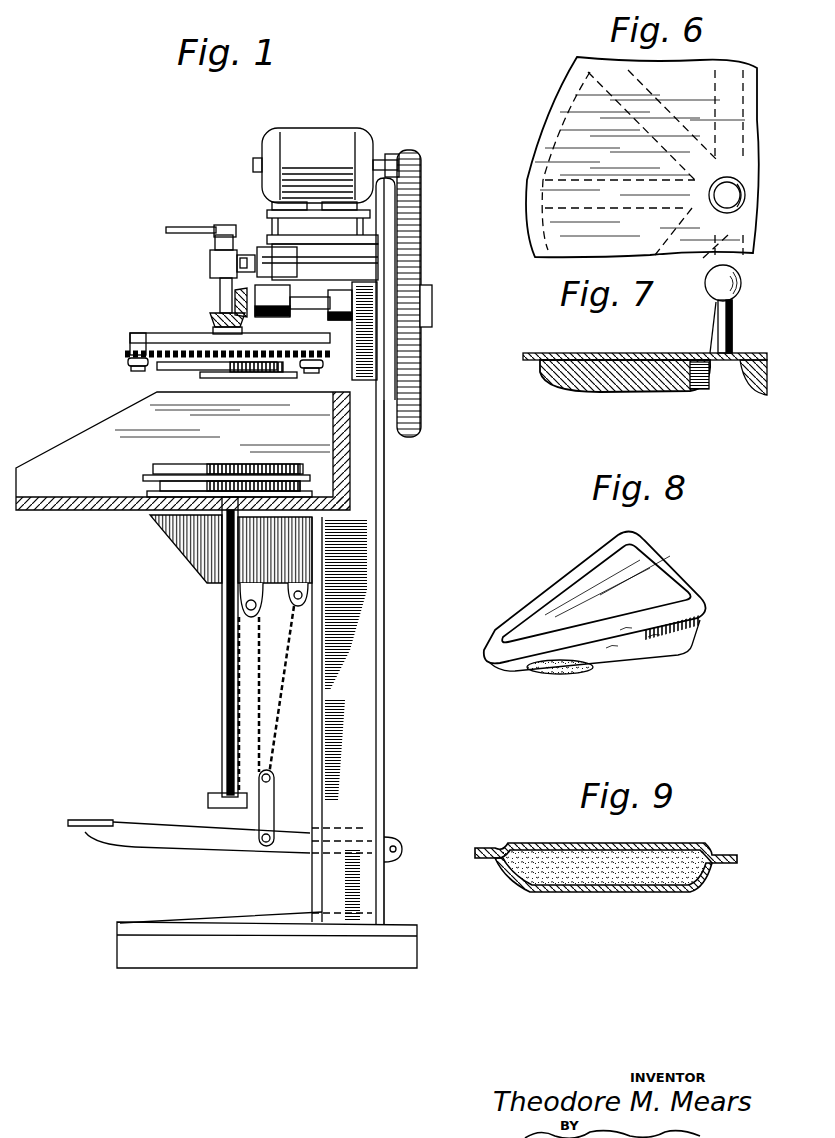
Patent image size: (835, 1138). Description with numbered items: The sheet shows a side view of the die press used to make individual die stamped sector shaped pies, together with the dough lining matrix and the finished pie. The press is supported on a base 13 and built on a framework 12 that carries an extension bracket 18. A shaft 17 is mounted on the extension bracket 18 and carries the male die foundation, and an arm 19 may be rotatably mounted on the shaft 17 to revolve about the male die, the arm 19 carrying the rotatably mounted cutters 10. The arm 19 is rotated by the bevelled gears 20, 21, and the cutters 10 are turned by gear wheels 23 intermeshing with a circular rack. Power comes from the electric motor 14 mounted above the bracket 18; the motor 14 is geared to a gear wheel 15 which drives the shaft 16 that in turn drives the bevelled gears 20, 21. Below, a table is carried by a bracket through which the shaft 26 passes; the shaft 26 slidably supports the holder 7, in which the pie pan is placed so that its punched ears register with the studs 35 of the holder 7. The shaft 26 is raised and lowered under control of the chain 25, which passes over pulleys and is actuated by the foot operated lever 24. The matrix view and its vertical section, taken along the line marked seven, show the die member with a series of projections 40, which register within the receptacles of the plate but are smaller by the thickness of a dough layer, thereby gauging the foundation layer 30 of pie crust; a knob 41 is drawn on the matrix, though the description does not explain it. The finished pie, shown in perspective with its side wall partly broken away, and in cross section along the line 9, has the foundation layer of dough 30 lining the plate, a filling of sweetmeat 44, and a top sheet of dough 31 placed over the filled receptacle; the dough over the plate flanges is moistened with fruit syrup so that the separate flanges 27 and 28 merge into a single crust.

In FIG. 1, the holder 7 is at (168, 465).
In FIG. 6, the holder 7 is at (505, 106).
In FIG. 8, the section line 9— 9 is at (522, 535).
In FIG. 1, the cutters 10 is at (128, 368).
In FIG. 1, the framework 12 is at (365, 795).
In FIG. 1, the base 13 is at (118, 946).
In FIG. 1, the electric motor 14 is at (326, 181).
In FIG. 1, the gear wheel 15 is at (421, 236).
In FIG. 1, the shaft 16 is at (432, 305).
In FIG. 1, the shaft 17 is at (220, 297).
In FIG. 1, the extension bracket 18 is at (210, 264).
In FIG. 1, the arm 19 is at (150, 334).
In FIG. 1, the bevelled gear 20 is at (210, 319).
In FIG. 1, the bevelled gear 21 is at (243, 323).
In FIG. 1, the gear wheels 23 is at (125, 353).
In FIG. 1, the foot operated lever 24 is at (100, 818).
In FIG. 1, the chain 25 is at (240, 750).
In FIG. 1, the shaft 26 is at (222, 663).
In FIG. 8, the flange 27 is at (552, 583).
In FIG. 9, the flange 27 is at (489, 840).
In FIG. 8, the flange 28 is at (487, 662).
In FIG. 9, the flange 28 is at (484, 860).
In FIG. 8, the foundation layer of dough 30 is at (553, 673).
In FIG. 9, the foundation layer of dough 30 is at (568, 892).
In FIG. 8, the top sheet of dough 31 is at (527, 628).
In FIG. 9, the top sheet of dough 31 is at (534, 834).
In FIG. 1, the studs 35 is at (148, 475).
In FIG. 6, the projections 40 is at (535, 150).
In FIG. 7, the projections 40 is at (550, 375).
In FIG. 6, the knob 41 is at (719, 207).
In FIG. 7, the knob 41 is at (741, 291).
In FIG. 8, the sweetmeat 44 is at (583, 668).
In FIG. 9, the sweetmeat 44 is at (635, 876).